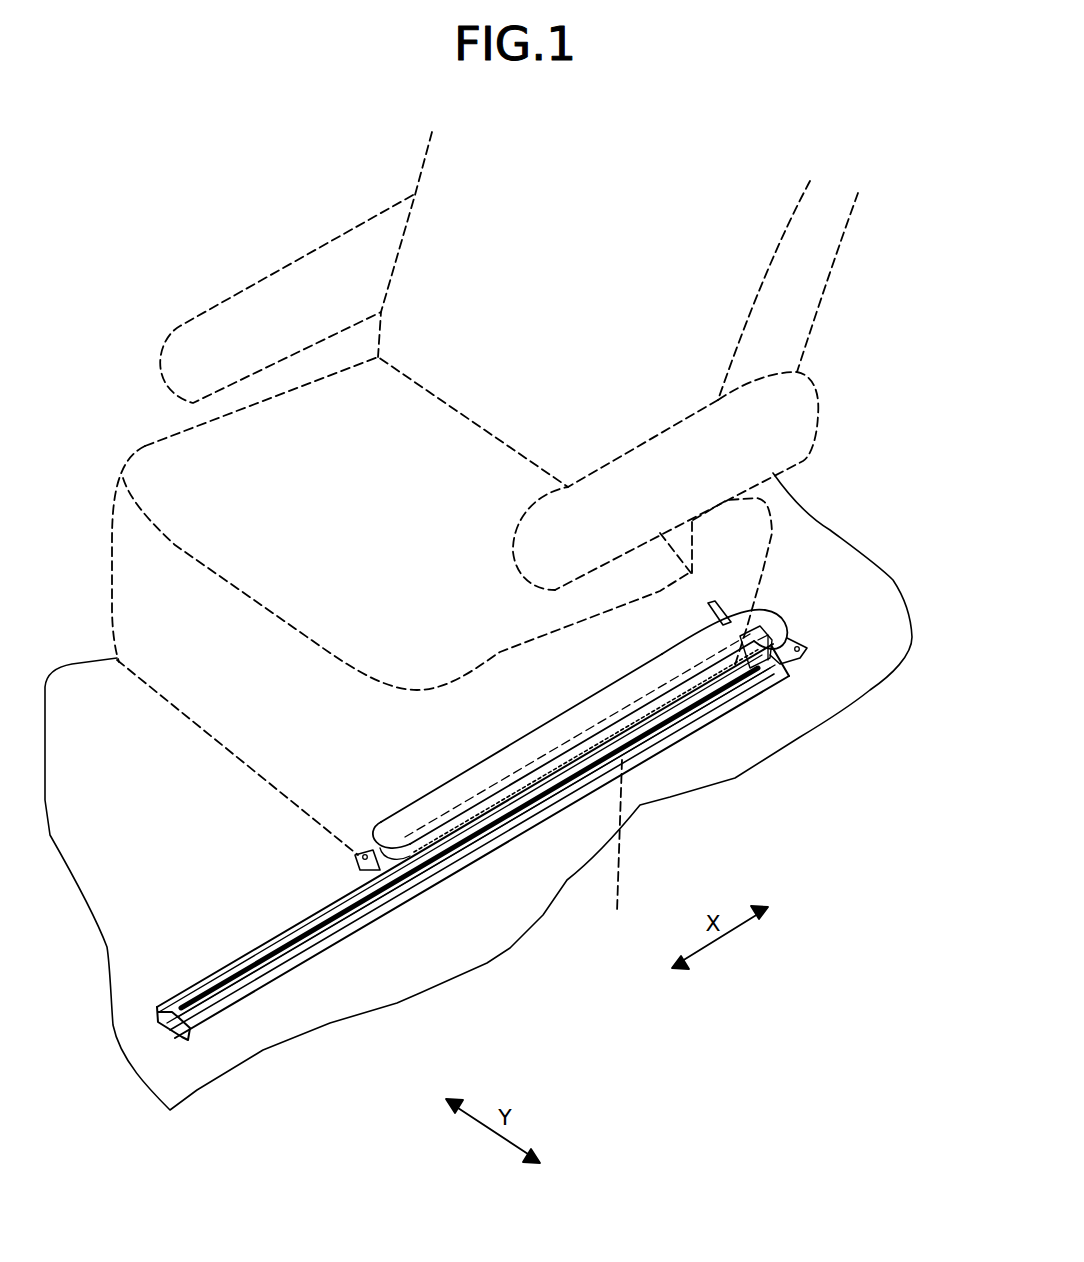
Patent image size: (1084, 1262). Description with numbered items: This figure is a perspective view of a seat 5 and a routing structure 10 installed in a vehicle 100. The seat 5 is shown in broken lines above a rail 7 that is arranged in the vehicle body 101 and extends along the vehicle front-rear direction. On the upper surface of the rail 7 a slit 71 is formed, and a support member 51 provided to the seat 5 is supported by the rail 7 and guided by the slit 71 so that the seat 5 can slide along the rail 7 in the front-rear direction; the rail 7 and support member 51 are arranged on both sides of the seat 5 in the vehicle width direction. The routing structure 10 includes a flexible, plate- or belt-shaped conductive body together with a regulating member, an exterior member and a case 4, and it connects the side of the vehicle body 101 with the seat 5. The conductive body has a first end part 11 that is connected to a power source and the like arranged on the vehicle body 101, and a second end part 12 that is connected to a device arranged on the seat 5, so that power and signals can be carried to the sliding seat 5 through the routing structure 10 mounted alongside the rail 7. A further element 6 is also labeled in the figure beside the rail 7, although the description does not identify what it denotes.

The vehicle 100 is at (186, 240).
The vehicle body 101 is at (884, 563).
The seat 5 is at (418, 177).
The routing structure 10 is at (777, 609).
The first end part 11 is at (722, 613).
The second end part 12 is at (722, 683).
The upper rail 6 is at (773, 663).
The rail 7 is at (340, 940).
The slit 71 is at (297, 945).
The case 4 is at (468, 789).
The support member 51 is at (617, 851).